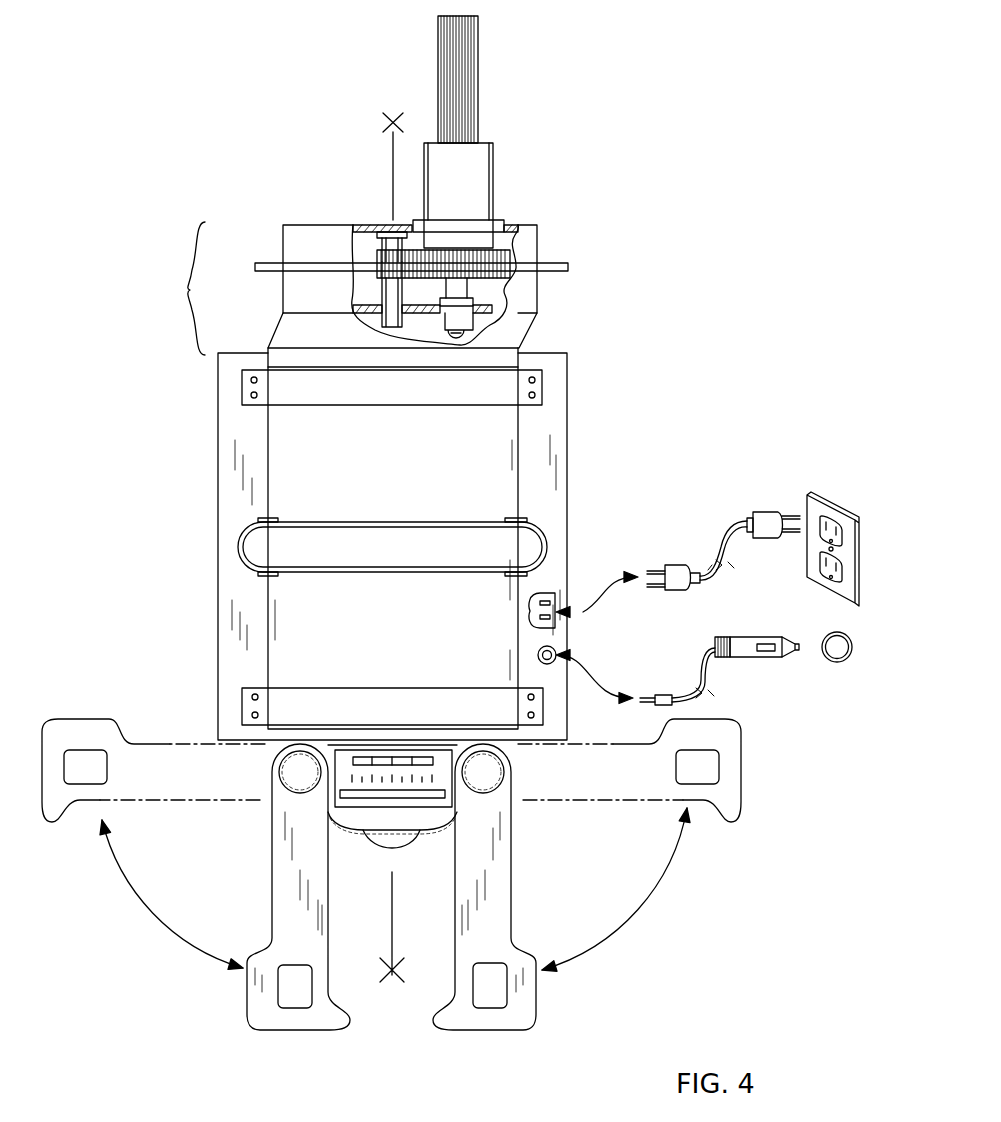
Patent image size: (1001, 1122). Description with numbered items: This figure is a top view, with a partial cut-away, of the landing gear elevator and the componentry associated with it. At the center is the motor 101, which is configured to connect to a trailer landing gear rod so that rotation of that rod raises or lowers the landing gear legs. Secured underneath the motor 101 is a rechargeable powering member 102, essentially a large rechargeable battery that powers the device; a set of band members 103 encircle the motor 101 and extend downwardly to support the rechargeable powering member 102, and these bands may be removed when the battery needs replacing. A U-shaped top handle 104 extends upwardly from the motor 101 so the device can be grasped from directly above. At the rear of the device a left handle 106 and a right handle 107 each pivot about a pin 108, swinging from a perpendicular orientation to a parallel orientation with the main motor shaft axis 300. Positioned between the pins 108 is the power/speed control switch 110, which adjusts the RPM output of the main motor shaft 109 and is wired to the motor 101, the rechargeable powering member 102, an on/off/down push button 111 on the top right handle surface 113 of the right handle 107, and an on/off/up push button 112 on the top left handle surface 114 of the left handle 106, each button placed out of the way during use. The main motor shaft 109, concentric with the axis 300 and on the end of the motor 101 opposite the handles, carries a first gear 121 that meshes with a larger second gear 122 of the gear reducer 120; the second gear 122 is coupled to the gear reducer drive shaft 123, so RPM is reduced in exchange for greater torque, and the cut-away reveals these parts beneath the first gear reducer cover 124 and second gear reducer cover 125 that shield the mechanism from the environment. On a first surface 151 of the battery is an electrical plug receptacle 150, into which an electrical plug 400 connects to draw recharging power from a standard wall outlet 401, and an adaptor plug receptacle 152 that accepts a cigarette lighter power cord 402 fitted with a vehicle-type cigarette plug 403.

The motor 101 is at (498, 445).
The rechargeable powering member 102 is at (567, 477).
The band members 103 is at (493, 378).
The top handle 104 is at (270, 542).
The left handle 106 is at (270, 845).
The right handle 107 is at (515, 845).
The pin 108 is at (295, 767).
The main motor shaft 109 is at (387, 297).
The power/speed control switch 110 is at (357, 773).
The on/off/down push button 111 is at (490, 1003).
The on/off/up push button 112 is at (280, 995).
The top right handle surface 113 is at (500, 890).
The top left handle surface 114 is at (280, 882).
The gear reducer 120 is at (333, 288).
The first gear 121 is at (382, 265).
The second gear 122 is at (502, 255).
The gear reducer drive shaft 123 is at (468, 83).
The first gear reducer cover 124 is at (518, 297).
The second gear reducer cover 125 is at (537, 238).
The electrical plug receptacle 150 is at (550, 622).
The first surface 151 is at (560, 707).
The adaptor plug receptacle 152 is at (555, 648).
The main motor shaft axis 300 is at (392, 168).
The electrical plug 400 is at (677, 573).
The wall outlet 401 is at (822, 493).
The cigarette lighter power cord 402 is at (753, 655).
The cigarette plug 403 is at (837, 662).